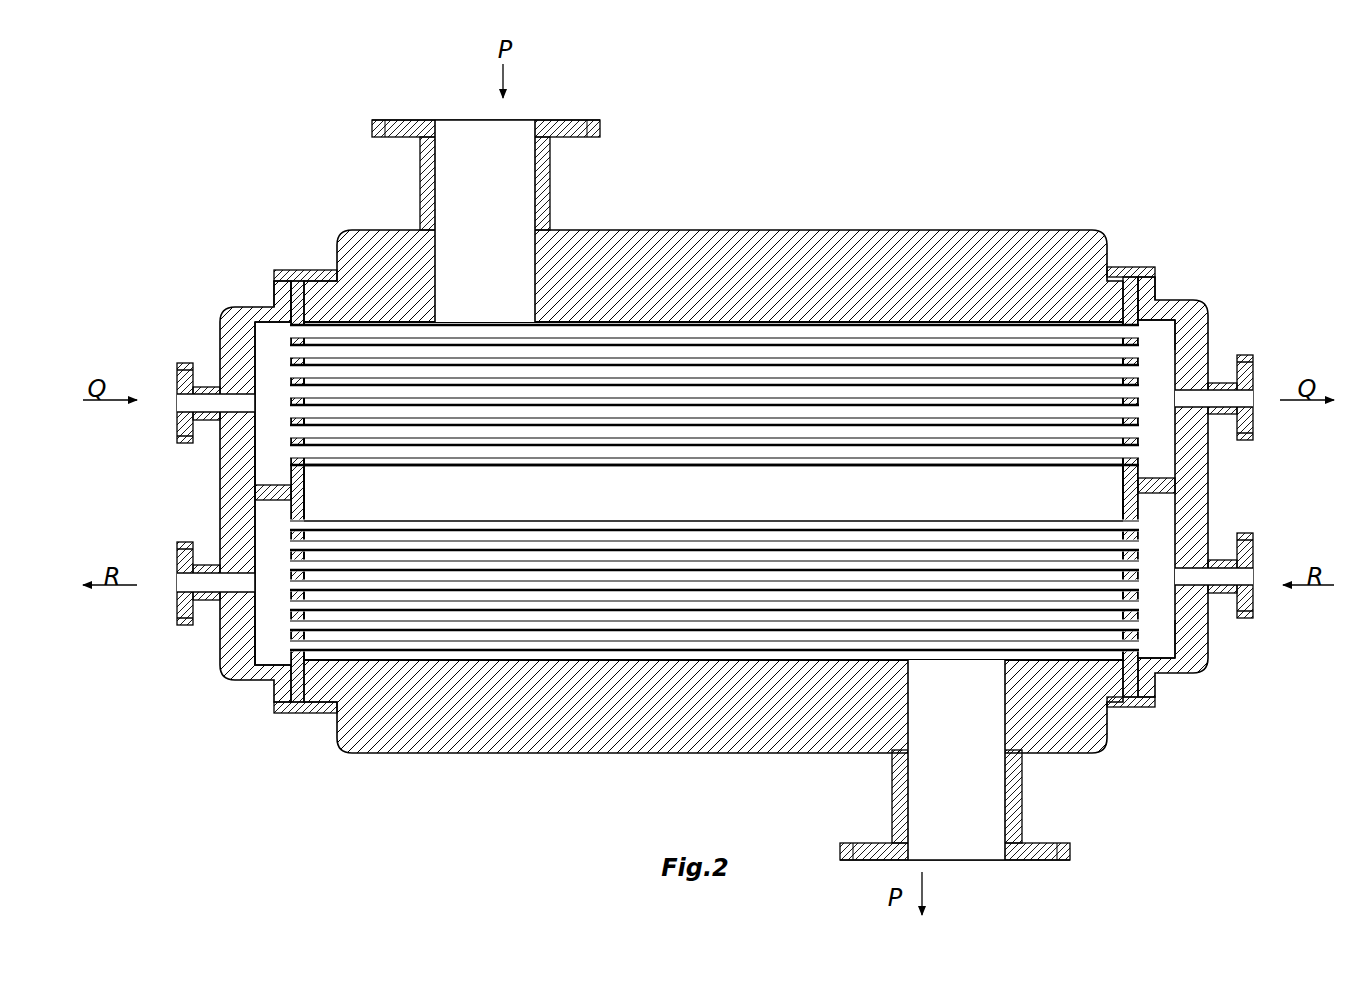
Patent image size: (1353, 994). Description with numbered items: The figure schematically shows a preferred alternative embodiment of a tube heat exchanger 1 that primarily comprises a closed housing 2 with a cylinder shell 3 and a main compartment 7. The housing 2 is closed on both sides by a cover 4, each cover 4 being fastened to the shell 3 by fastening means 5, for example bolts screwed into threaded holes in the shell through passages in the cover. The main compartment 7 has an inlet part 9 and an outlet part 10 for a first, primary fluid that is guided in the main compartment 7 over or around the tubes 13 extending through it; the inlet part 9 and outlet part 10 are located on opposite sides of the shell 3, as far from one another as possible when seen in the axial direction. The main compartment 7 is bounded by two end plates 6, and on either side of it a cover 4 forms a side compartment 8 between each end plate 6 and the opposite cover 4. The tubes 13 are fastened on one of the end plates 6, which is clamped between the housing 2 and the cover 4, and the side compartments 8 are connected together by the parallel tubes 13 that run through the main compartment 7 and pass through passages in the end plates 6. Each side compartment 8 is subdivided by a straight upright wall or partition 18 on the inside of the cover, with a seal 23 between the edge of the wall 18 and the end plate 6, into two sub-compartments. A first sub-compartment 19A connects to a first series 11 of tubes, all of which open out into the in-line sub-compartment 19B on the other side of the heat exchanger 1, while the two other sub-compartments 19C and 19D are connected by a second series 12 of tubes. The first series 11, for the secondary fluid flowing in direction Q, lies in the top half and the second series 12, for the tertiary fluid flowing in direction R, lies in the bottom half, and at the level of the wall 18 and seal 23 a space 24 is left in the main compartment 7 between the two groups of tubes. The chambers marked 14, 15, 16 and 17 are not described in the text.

The tube heat exchanger 1 is at (1286, 152).
The housing 2 is at (1124, 190).
The cylinder shell 3 is at (665, 258).
The cover 4 is at (238, 348).
The fastening means 5 is at (287, 268).
The end plate 6 is at (300, 270).
The main compartment 7 is at (432, 492).
The side compartment 8 is at (268, 438).
The inlet part 9 is at (450, 155).
The outlet part 10 is at (990, 795).
The first series of tubes 11 is at (915, 395).
The second series of tubes 12 is at (845, 575).
The tubes 13 is at (305, 362).
The inlet chamber 14 is at (282, 423).
The return chamber 15 is at (290, 382).
The return chamber 16 is at (1169, 596).
The outlet chamber 17 is at (287, 599).
The partition 18 is at (258, 508).
The first sub-compartment 19A is at (275, 452).
The sub-compartment 19B is at (1150, 338).
The sub-compartment 19C is at (1148, 628).
The sub-compartment 19D is at (275, 636).
The seal 23 is at (1195, 478).
The space 24 is at (1035, 502).